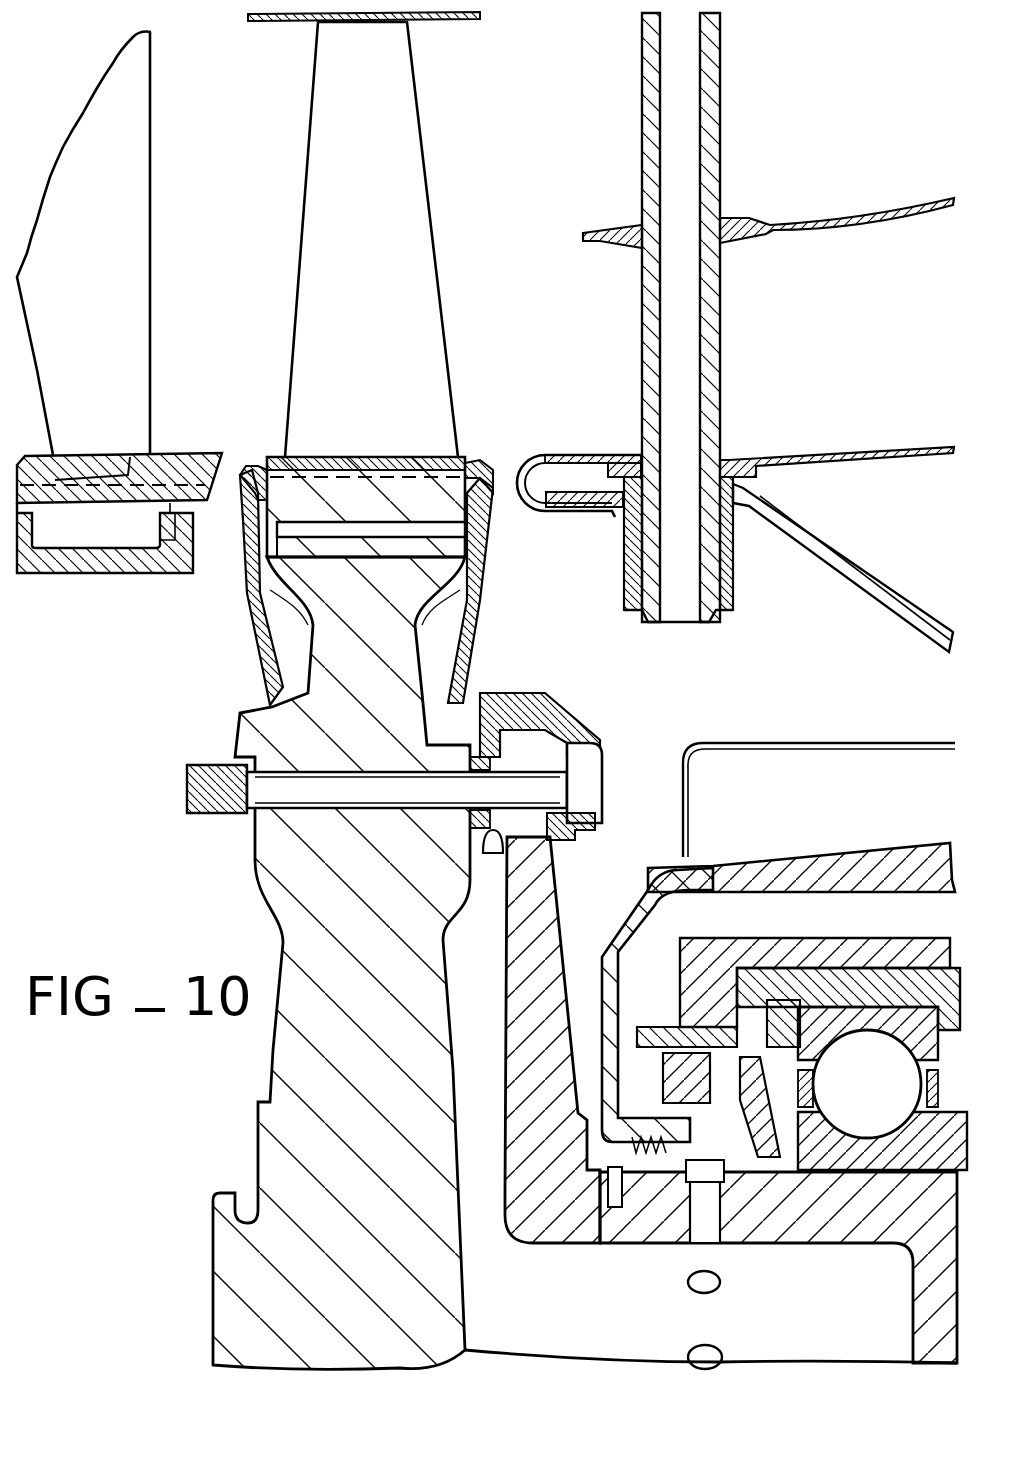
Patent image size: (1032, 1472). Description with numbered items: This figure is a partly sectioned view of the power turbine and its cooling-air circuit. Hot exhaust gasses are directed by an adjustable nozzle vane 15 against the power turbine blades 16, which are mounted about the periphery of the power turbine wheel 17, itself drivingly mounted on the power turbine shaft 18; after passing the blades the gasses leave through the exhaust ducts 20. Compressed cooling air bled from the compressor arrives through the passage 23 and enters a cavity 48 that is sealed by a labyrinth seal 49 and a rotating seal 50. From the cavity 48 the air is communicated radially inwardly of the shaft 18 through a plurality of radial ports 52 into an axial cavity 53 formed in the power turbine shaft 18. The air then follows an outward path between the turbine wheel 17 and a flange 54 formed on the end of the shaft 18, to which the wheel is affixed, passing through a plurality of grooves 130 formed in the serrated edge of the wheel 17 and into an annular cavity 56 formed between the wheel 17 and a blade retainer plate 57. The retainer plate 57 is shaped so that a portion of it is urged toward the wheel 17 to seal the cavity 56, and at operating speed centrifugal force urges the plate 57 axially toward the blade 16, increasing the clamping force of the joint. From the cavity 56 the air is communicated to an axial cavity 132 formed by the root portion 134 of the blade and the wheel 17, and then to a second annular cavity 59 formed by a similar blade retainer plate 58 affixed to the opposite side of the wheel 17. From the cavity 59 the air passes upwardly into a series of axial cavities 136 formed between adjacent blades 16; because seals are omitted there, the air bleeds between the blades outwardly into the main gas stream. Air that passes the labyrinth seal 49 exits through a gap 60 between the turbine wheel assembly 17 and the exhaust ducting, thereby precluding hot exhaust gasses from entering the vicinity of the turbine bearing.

The adjustable nozzle vane 15 is at (90, 253).
The power turbine blade 16 is at (368, 199).
The power turbine wheel 17 is at (368, 1111).
The power turbine shaft 18 is at (848, 1221).
The exhaust duct 20 is at (522, 132).
The passage 23 is at (870, 928).
The cavity 48 is at (730, 1139).
The labyrinth seal 49 is at (653, 1145).
The rotating seal 50 is at (762, 1137).
The radial port 52 is at (720, 1282).
The axial cavity 53 is at (870, 1352).
The flange 54 is at (552, 1064).
The cavity 56 is at (460, 622).
The blade retainer plate 57 is at (473, 605).
The blade retainer plate 58 is at (257, 613).
The cavity 59 is at (297, 620).
The gap 60 is at (516, 457).
The groove 130 is at (495, 845).
The axial cavity 132 is at (383, 527).
The root portion 134 is at (262, 472).
The axial cavity 136 is at (265, 470).